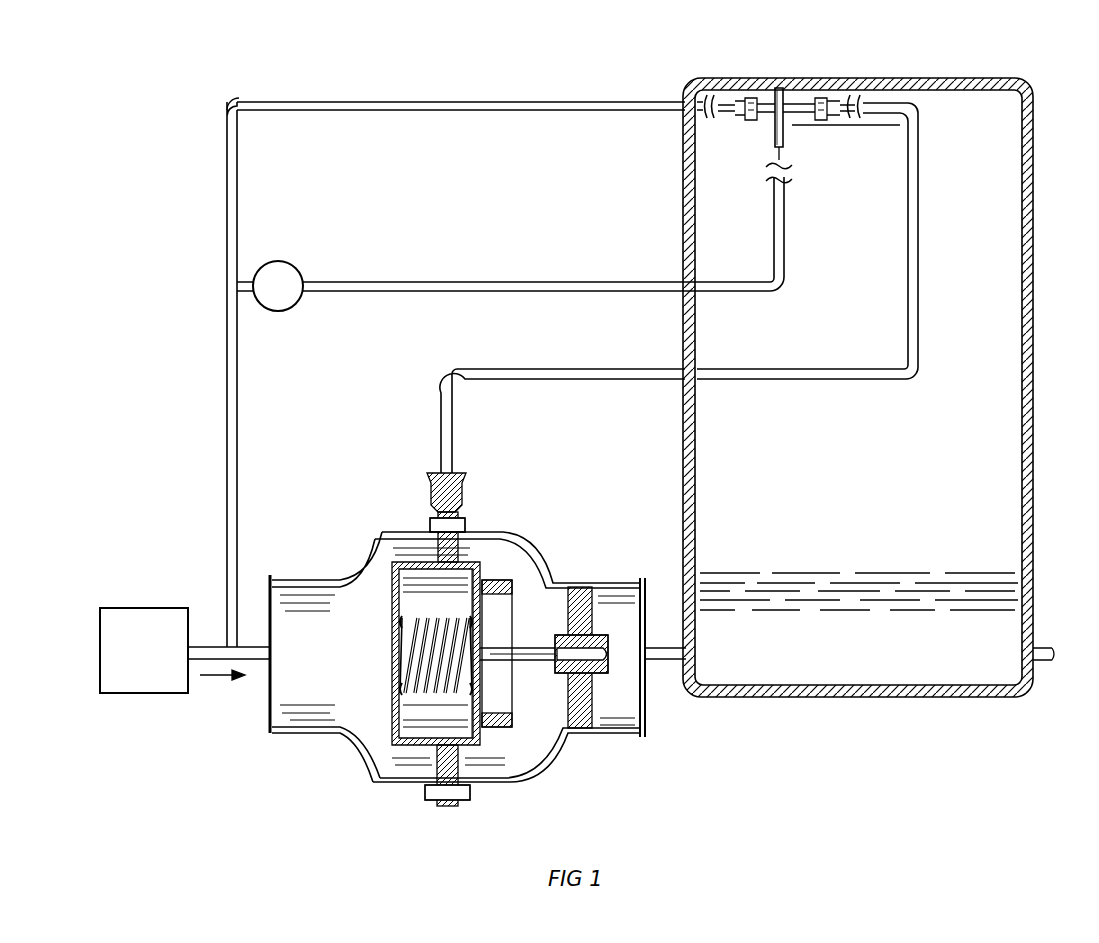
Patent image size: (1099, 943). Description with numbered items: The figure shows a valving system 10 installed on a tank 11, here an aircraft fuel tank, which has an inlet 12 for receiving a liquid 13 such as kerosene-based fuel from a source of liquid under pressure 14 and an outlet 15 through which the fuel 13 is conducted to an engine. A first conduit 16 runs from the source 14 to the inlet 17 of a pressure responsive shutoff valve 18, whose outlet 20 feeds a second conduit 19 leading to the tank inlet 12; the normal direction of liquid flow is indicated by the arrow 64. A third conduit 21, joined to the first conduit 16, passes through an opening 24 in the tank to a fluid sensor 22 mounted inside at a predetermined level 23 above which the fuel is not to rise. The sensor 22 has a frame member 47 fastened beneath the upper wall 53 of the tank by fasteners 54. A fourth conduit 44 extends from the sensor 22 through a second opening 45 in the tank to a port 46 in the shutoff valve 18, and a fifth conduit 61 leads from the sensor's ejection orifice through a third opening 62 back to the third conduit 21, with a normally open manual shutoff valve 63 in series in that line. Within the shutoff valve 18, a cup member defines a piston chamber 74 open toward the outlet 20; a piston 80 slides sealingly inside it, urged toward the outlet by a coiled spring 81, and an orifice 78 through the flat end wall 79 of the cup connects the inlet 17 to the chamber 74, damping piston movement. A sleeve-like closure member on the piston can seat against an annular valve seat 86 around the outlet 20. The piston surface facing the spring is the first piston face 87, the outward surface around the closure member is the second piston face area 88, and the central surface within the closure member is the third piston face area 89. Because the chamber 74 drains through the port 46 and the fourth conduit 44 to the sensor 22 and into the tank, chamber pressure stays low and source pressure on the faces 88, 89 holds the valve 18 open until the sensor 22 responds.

The valving system 10 is at (188, 205).
The tank 11 is at (1036, 212).
The inlet 12 is at (690, 656).
The liquid 13 is at (866, 659).
The source of liquid under pressure 14 is at (126, 606).
The outlet 15 is at (1032, 657).
The first conduit 16 is at (206, 645).
The inlet 17 is at (272, 703).
The pressure responsive shutoff valve 18 is at (484, 782).
The second conduit 19 is at (661, 664).
The outlet 20 is at (632, 592).
The third conduit 21 is at (224, 440).
The fluid sensor 22 is at (800, 143).
The predetermined level 23 is at (882, 127).
The opening 24 is at (683, 104).
The fourth conduit 44 is at (920, 252).
The second opening 45 is at (690, 375).
The port 46 is at (453, 470).
The frame member 47 is at (772, 132).
The upper wall 53 is at (944, 77).
The fasteners 54 is at (779, 84).
The fifth conduit 61 is at (786, 250).
The third opening 62 is at (696, 283).
The manual shutoff valve 63 is at (280, 261).
The arrow 64 is at (216, 680).
The piston chamber 74 is at (450, 612).
The orifice 78 is at (393, 650).
The end wall 79 is at (392, 622).
The piston 80 is at (482, 628).
The coiled spring 81 is at (395, 698).
The valve seat 86 is at (540, 567).
The first piston face 87 is at (470, 713).
The second piston face area 88 is at (500, 738).
The third piston face area 89 is at (500, 712).